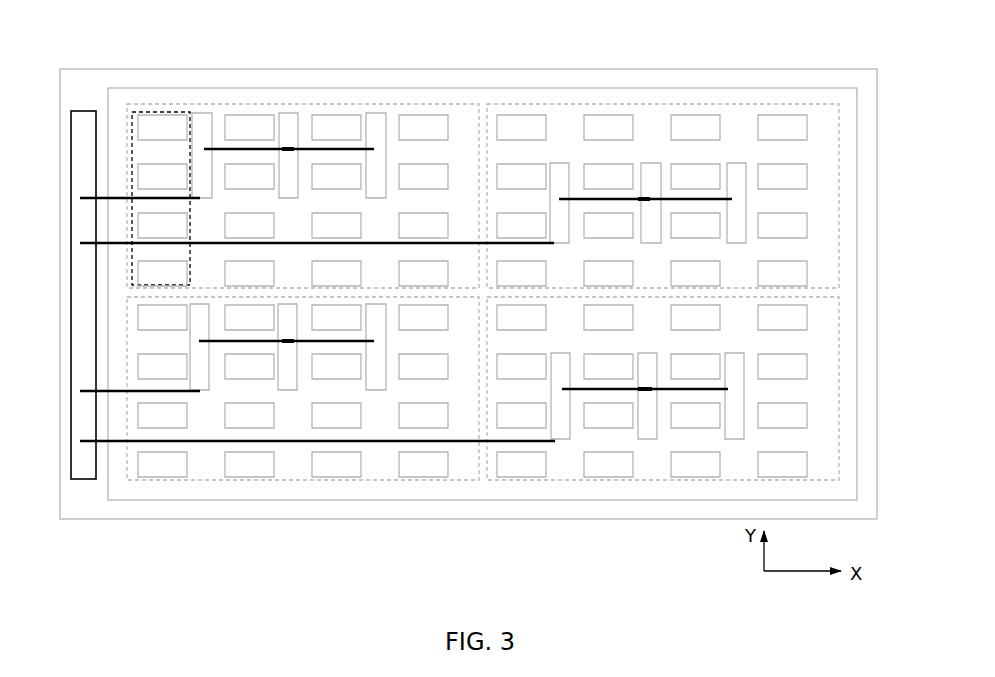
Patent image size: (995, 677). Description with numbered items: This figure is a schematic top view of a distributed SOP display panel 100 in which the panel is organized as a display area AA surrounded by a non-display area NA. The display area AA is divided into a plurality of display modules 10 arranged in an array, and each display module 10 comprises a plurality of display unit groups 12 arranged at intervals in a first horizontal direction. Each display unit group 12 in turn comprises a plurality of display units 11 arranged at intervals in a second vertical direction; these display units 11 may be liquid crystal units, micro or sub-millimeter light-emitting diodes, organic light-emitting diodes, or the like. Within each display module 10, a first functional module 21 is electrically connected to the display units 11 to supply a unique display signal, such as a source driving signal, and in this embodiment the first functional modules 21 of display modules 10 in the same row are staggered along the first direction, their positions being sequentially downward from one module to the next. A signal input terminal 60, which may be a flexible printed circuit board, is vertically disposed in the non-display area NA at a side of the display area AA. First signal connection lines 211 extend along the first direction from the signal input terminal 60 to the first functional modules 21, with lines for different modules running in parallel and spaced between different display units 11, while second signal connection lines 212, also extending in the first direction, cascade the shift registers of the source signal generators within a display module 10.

The distributed SOP display panel 100 is at (515, 69).
The display module 10 is at (227, 103).
The display unit 11 is at (412, 120).
The display unit group 12 is at (160, 110).
The first functional module 21 is at (288, 120).
The first signal connection line 211 is at (218, 445).
The second signal connection line 212 is at (577, 395).
The signal input terminal 60 is at (82, 465).
The display area AA is at (305, 491).
The non-display area NA is at (379, 508).